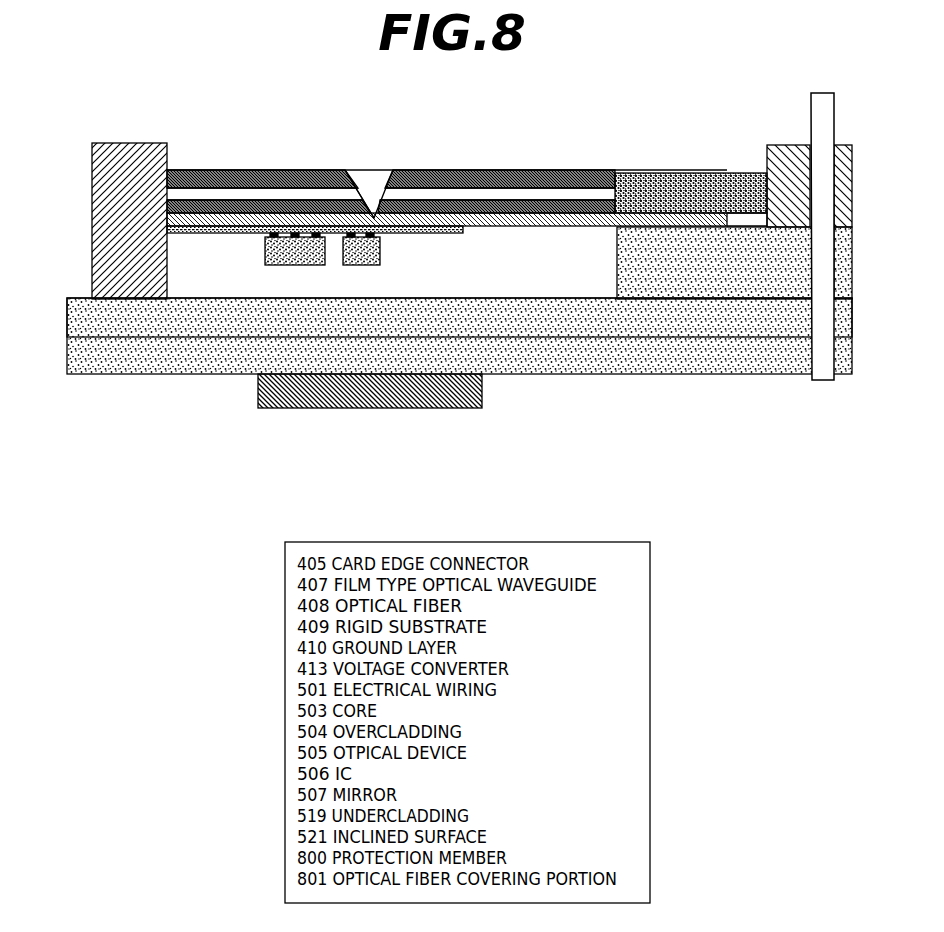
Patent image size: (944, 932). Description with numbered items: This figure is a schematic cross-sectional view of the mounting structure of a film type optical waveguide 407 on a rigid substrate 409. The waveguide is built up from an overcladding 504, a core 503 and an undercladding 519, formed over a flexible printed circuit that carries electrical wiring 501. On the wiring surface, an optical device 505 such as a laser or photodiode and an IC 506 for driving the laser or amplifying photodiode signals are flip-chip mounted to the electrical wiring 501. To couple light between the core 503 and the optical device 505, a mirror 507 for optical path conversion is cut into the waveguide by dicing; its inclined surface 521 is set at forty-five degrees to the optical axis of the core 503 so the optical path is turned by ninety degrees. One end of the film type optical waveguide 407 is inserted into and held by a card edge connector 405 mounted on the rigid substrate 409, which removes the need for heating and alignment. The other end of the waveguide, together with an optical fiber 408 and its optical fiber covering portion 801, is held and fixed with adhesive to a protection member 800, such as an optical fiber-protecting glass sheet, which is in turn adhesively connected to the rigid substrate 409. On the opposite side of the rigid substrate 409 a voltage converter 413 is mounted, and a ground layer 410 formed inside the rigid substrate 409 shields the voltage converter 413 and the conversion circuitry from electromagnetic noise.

The card edge connector 405 is at (111, 148).
The film type optical waveguide 407 is at (447, 183).
The optical fiber 408 is at (643, 177).
The rigid substrate 409 is at (657, 368).
The ground layer 410 is at (213, 337).
The voltage converter 413 is at (352, 397).
The electrical wiring 501 is at (215, 233).
The core 503 is at (512, 195).
The overcladding 504 is at (447, 168).
The optical device 505 is at (390, 250).
The IC 506 is at (263, 263).
The mirror 507 is at (393, 170).
The undercladding 519 is at (548, 215).
The inclined surface 521 is at (356, 170).
The protection member 800 is at (645, 257).
The optical fiber covering portion 801 is at (787, 152).